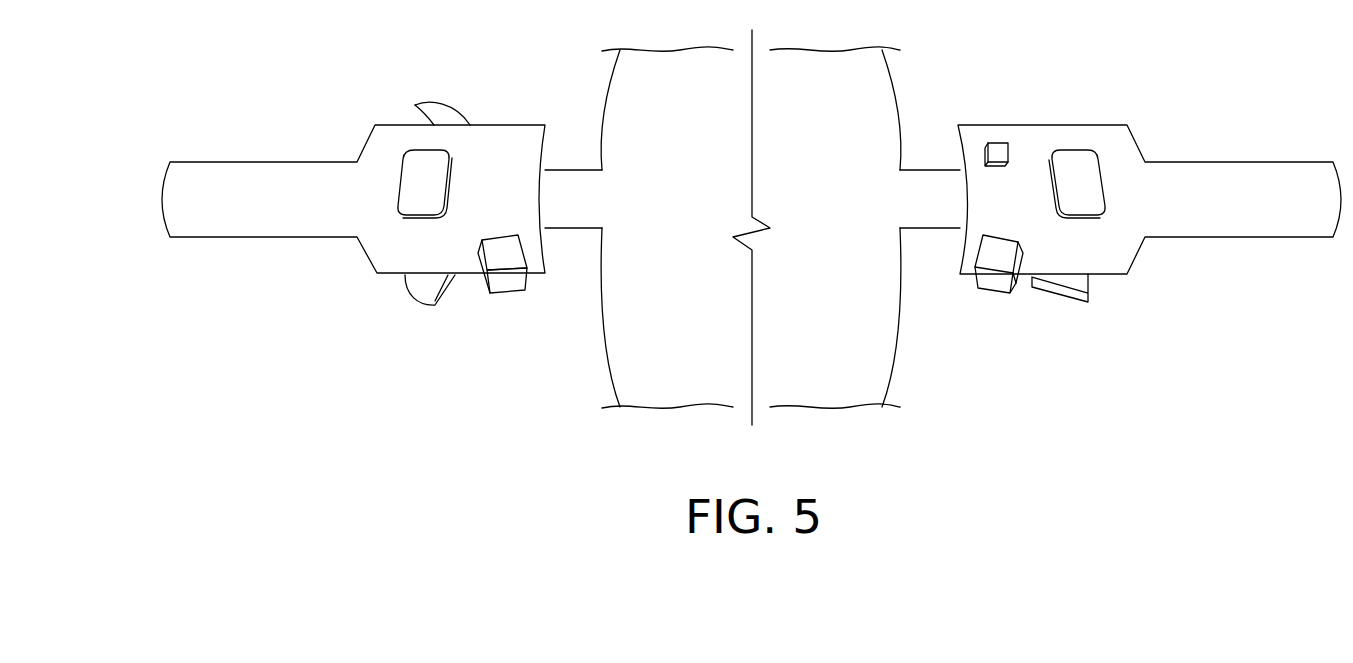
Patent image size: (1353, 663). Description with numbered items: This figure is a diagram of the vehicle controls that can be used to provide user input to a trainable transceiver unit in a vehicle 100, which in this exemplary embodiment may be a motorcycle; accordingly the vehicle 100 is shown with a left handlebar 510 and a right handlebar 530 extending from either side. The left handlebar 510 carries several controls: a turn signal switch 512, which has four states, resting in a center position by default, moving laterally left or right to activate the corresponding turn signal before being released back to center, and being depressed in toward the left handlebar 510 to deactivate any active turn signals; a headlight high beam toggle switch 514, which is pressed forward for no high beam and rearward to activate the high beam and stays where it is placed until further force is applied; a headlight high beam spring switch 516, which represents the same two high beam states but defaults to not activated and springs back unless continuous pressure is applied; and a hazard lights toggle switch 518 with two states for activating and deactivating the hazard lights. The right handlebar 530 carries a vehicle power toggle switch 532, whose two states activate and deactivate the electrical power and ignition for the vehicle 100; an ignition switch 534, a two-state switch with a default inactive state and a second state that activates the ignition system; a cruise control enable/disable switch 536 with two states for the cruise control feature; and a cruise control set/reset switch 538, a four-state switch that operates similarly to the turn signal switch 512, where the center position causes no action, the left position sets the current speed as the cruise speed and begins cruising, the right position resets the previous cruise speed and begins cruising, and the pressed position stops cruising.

The vehicle 100 is at (725, 168).
The left handlebar 510 is at (209, 172).
The turn signal switch 512 is at (433, 293).
The headlight high beam toggle switch 514 is at (404, 191).
The headlight high beam spring switch 516 is at (441, 115).
The hazard lights toggle switch 518 is at (497, 250).
The right handlebar 530 is at (1295, 170).
The vehicle power toggle switch 532 is at (998, 148).
The ignition switch 534 is at (1100, 191).
The cruise control enable/disable switch 536 is at (1005, 247).
The cruise control set/reset switch 538 is at (1080, 297).